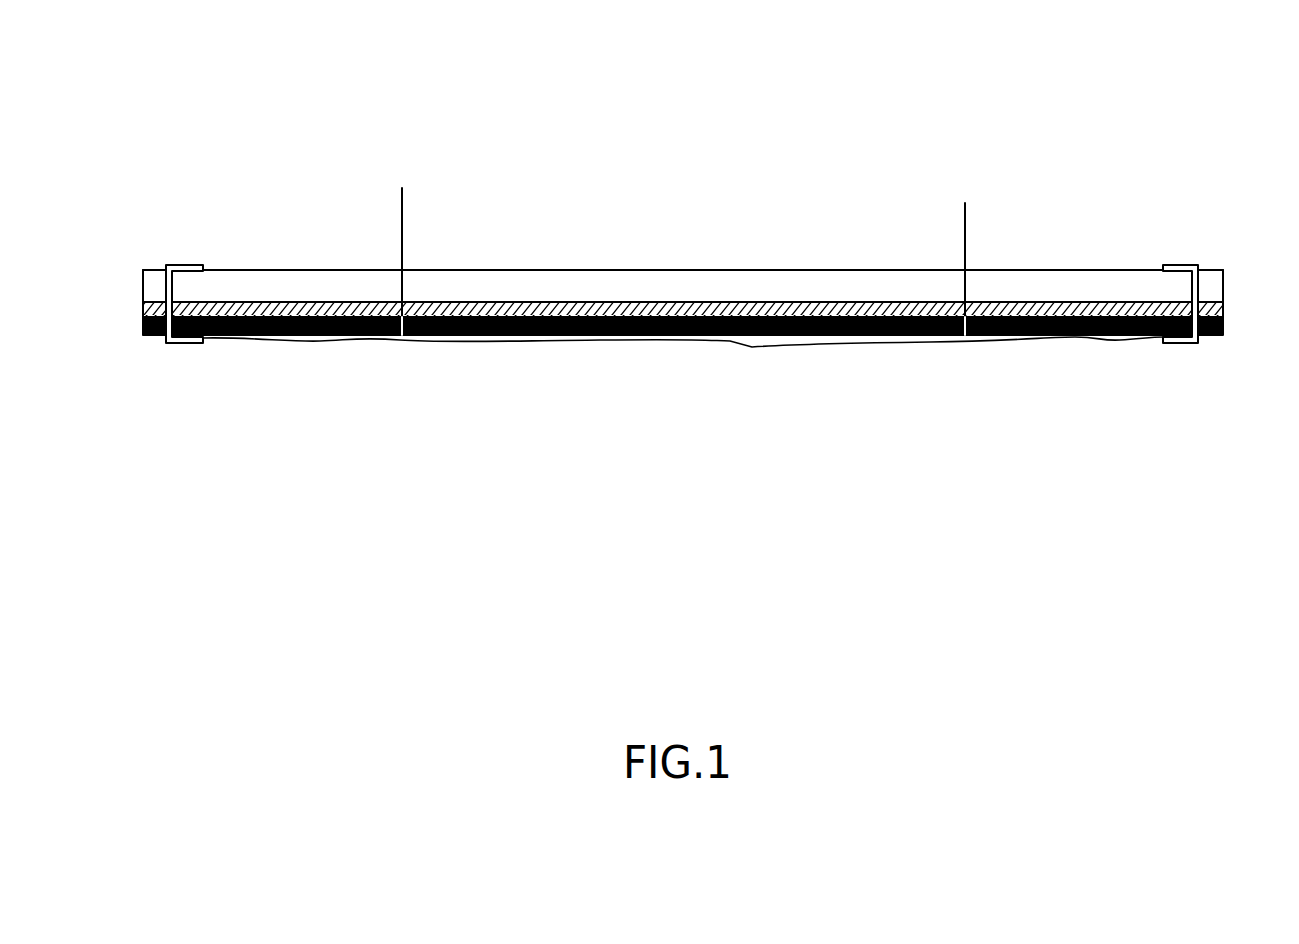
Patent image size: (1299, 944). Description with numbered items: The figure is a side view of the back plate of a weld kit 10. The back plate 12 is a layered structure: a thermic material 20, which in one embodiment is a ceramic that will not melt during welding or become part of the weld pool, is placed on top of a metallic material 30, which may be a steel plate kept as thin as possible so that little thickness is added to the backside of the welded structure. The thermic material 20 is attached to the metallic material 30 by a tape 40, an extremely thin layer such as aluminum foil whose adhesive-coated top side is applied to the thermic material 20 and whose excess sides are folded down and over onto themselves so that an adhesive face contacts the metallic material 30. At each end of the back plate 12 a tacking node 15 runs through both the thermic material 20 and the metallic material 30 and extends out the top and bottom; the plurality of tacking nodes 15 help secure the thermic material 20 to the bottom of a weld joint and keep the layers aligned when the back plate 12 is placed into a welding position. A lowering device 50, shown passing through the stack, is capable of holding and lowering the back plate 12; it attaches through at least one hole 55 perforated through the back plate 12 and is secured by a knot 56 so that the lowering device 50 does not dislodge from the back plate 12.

The weld kit 10 is at (816, 98).
The back plate 12 is at (1234, 270).
The tacking nodes 15 is at (183, 343).
The thermic material 20 is at (683, 270).
The metallic material 30 is at (683, 334).
The tape 40 is at (143, 313).
The lowering device 50 is at (402, 225).
The hole 55 is at (402, 290).
The knot 56 is at (965, 346).